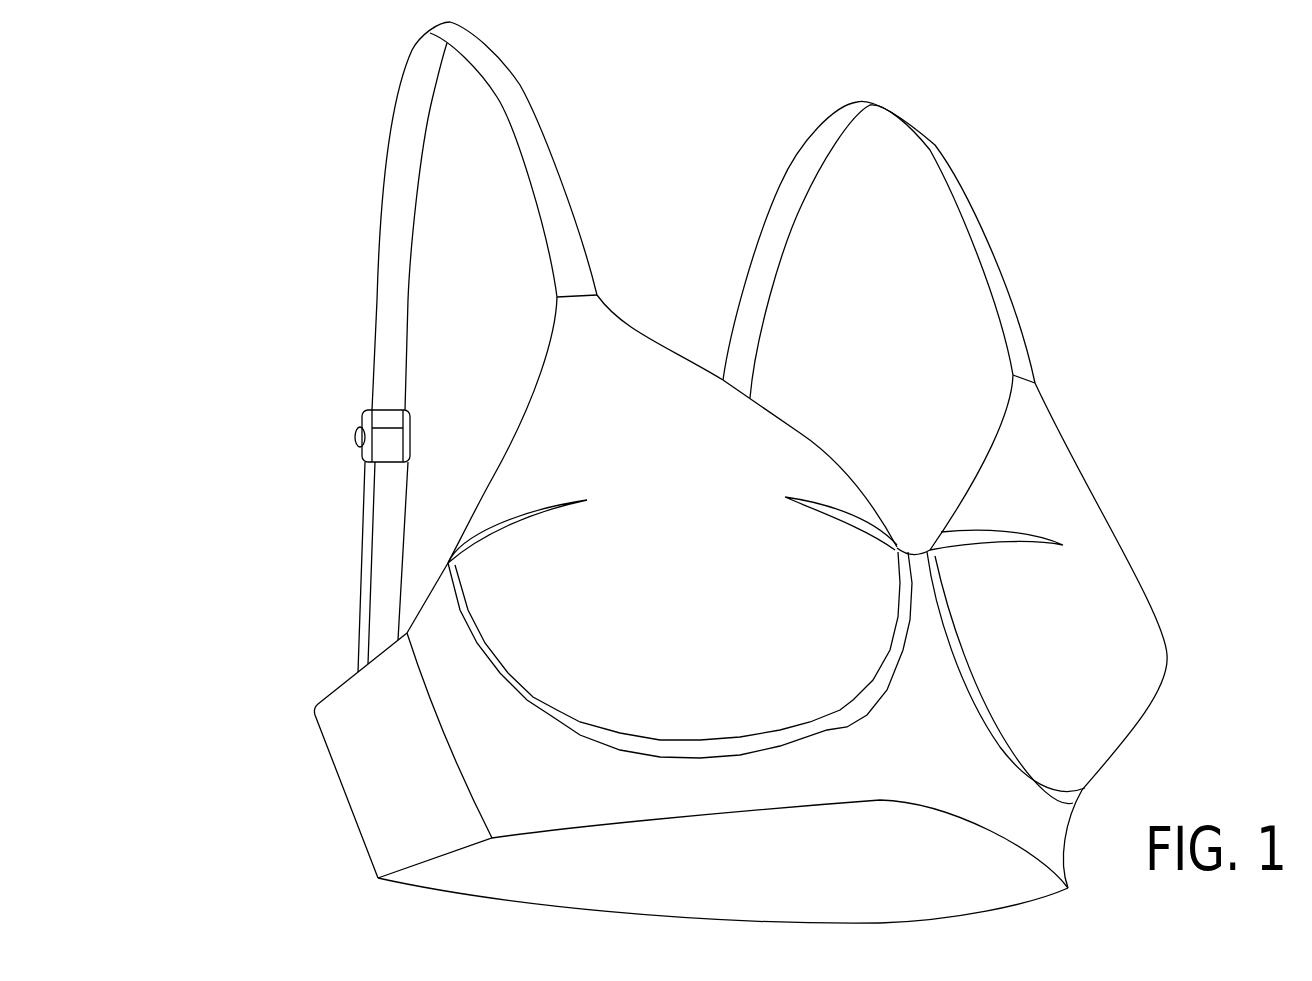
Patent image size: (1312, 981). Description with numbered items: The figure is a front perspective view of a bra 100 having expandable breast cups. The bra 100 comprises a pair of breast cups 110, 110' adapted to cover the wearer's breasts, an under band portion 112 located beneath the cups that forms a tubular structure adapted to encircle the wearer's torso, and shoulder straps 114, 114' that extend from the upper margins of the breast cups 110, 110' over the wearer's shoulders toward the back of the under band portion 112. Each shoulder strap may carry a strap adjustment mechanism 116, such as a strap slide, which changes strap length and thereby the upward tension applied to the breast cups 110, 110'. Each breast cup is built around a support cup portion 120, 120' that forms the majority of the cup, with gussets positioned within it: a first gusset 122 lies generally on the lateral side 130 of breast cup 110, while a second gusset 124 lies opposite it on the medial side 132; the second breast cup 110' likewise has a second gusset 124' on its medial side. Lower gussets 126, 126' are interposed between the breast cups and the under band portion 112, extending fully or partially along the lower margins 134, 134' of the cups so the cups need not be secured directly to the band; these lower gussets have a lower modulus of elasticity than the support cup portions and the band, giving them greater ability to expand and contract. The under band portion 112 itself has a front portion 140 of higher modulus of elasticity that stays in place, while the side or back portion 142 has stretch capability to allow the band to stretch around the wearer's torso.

The bra 100 is at (168, 160).
The breast cup 110 is at (507, 430).
The breast cup 110' is at (997, 460).
The under band portion 112 is at (1052, 822).
The shoulder strap 114 is at (484, 216).
The shoulder strap 114' is at (879, 249).
The strap adjustment mechanism 116 is at (358, 448).
The support cup portion 120 is at (660, 332).
The support cup portion 120' is at (1101, 586).
The first gusset 122 is at (463, 543).
The second gusset 124 is at (854, 510).
The second gusset 124' is at (996, 563).
The lower gusset 126 is at (680, 677).
The lower gusset 126' is at (992, 680).
The lateral side 130 is at (486, 470).
The medial side 132 is at (829, 447).
The lower margin 134 is at (677, 646).
The lower margin 134' is at (1006, 672).
The front portion 140 is at (599, 799).
The side and/or back portion 142 is at (364, 757).